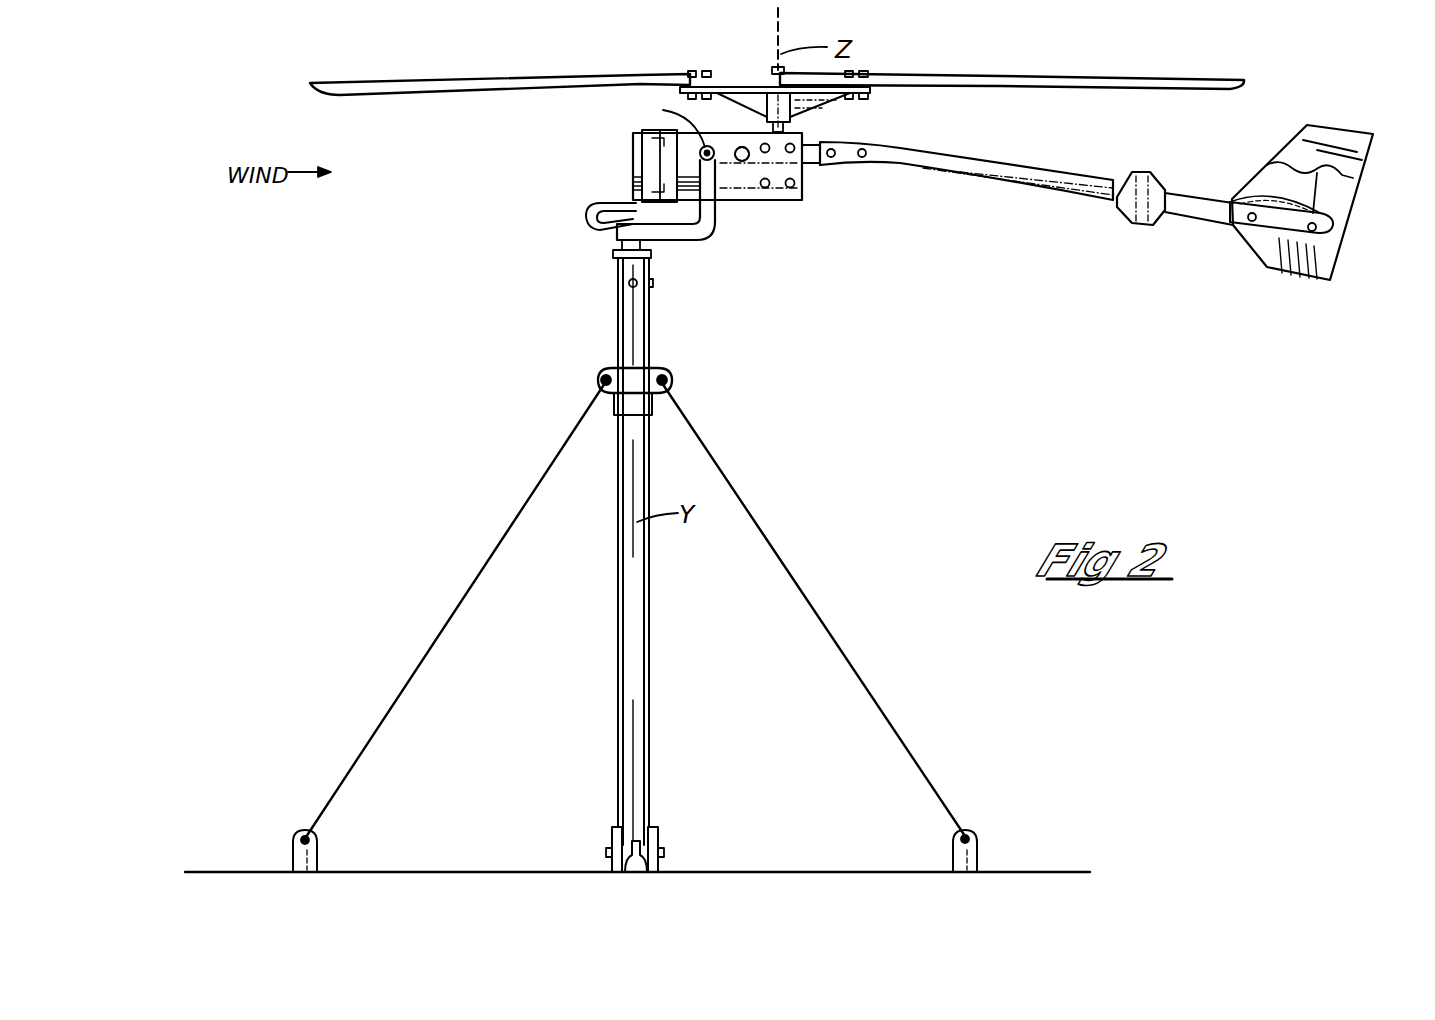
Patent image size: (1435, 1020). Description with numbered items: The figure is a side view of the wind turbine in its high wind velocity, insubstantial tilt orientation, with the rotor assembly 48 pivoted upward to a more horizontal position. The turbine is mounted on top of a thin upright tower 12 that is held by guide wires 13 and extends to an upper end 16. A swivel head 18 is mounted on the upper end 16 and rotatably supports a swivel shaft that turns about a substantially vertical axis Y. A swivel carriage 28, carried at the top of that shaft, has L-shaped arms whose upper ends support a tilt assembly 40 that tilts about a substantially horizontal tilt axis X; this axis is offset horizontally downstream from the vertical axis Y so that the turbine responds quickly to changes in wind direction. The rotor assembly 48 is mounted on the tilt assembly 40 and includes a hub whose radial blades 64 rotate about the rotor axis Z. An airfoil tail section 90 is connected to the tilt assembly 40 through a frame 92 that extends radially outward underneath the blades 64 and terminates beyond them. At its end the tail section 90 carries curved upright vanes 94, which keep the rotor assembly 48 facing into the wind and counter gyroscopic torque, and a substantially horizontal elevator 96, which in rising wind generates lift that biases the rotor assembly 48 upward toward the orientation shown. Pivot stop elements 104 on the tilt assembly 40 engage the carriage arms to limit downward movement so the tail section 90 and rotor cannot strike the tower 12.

The tower 12 is at (632, 653).
The guide wires 13 is at (413, 680).
The upper end 16 is at (638, 342).
The swivel head 18 is at (620, 232).
The swivel carriage 28 is at (682, 248).
The tilt assembly 40 is at (772, 204).
The rotor assembly 48 is at (813, 110).
The radial blades 64 is at (507, 84).
The airfoil tail section 90 is at (1231, 252).
The frame 92 is at (982, 170).
The upright vanes 94 is at (1353, 172).
The elevator 96 is at (1318, 206).
The pivot stop elements 104 is at (748, 158).